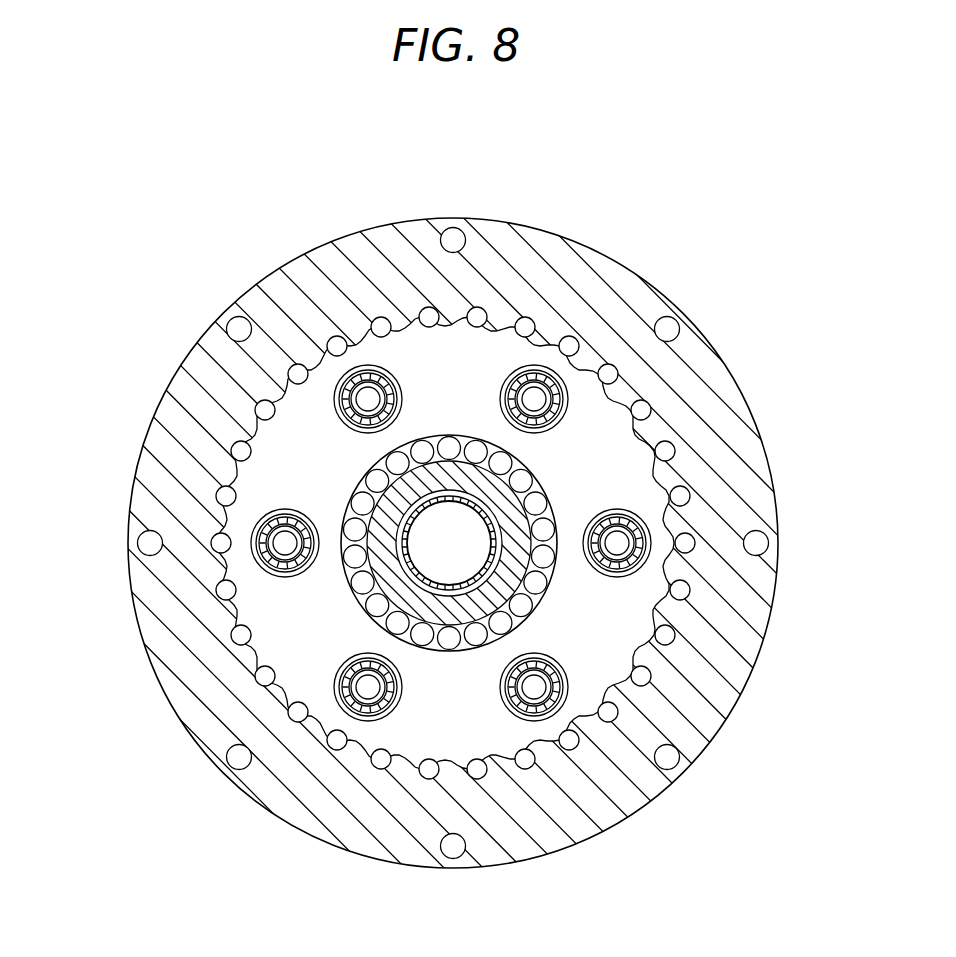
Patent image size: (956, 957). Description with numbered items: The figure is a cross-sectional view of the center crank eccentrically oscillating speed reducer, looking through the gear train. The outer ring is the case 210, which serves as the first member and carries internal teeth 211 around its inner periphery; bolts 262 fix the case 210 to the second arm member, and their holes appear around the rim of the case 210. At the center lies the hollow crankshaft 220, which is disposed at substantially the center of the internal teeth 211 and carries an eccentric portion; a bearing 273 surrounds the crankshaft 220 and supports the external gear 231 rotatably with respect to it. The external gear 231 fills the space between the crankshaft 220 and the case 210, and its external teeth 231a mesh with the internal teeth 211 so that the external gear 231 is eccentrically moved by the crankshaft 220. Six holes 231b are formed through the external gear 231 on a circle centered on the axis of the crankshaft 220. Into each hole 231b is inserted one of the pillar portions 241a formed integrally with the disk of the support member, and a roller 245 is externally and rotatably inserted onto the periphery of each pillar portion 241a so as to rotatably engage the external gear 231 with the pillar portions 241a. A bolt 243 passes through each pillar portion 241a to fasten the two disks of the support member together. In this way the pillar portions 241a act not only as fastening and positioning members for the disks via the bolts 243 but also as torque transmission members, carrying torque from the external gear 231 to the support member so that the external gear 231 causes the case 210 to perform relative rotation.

The case 210 is at (703, 386).
The internal teeth 211 is at (680, 494).
The hollow crankshaft 220 is at (297, 457).
The external gear 231 is at (247, 422).
The external teeth 231a is at (660, 587).
The holes 231b is at (335, 687).
The pillar portions 241a is at (372, 707).
The bolts 243 is at (282, 543).
The rollers 245 is at (560, 707).
The bolts 262 is at (453, 848).
The bearing 273 is at (447, 455).